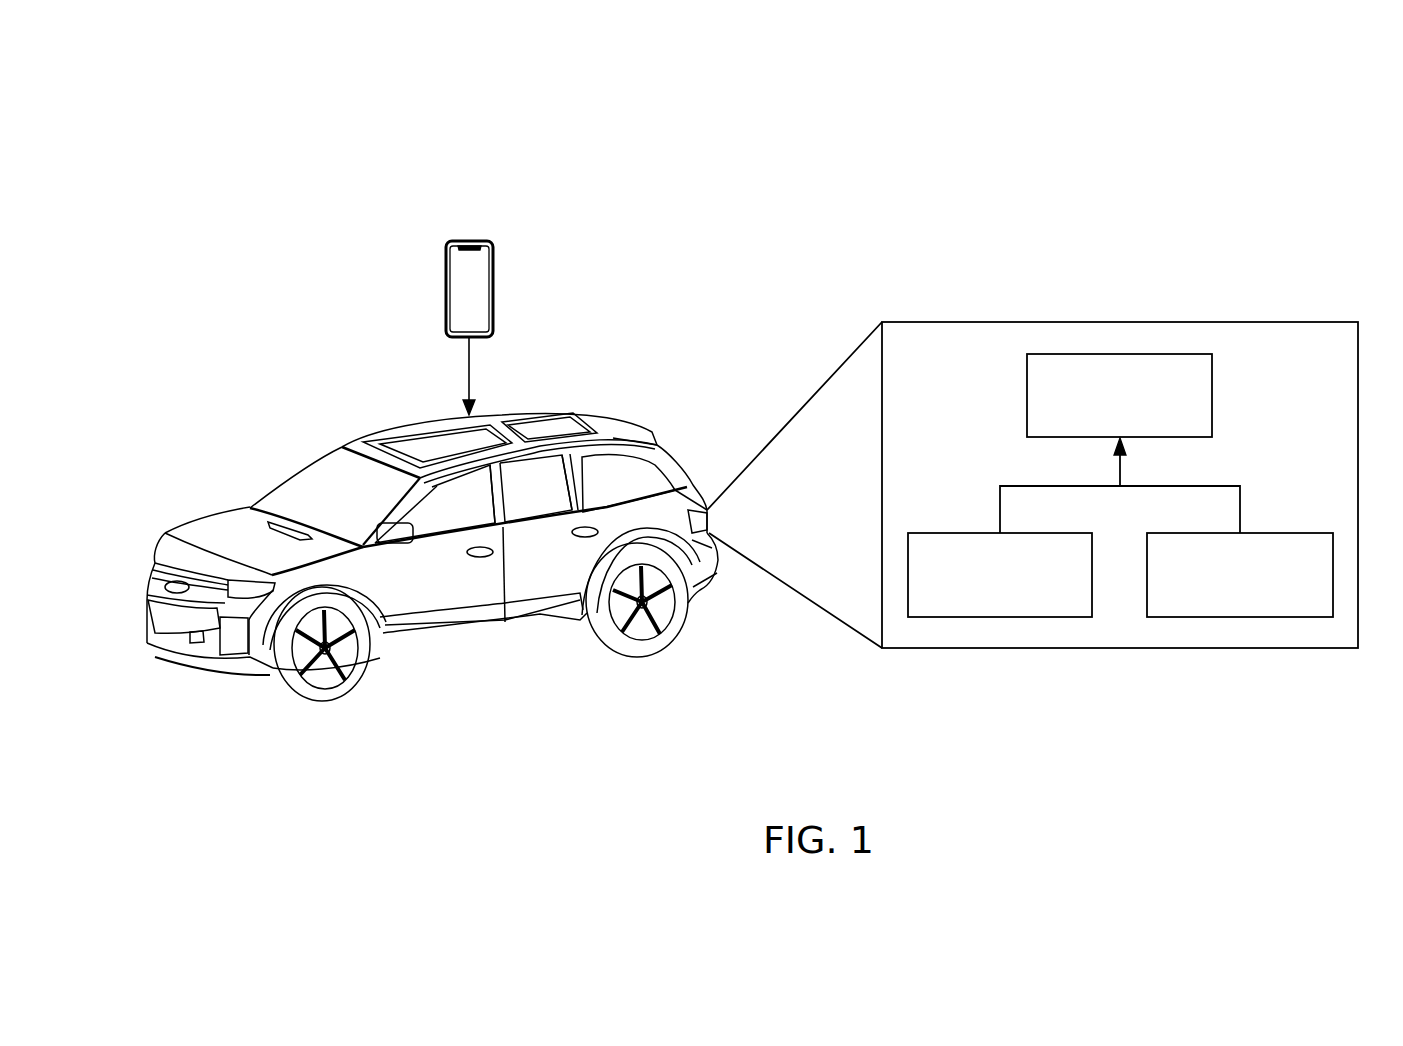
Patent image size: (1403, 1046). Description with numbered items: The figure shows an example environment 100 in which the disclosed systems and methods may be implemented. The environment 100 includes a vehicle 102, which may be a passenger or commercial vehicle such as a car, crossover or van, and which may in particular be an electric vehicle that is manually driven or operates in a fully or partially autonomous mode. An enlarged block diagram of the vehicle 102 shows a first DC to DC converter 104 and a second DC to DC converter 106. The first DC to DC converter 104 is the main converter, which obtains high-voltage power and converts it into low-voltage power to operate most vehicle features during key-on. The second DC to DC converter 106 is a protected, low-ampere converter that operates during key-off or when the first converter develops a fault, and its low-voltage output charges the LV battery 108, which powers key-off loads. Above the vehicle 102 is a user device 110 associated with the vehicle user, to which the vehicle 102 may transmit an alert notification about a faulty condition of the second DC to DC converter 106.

The environment 100 is at (302, 124).
The vehicle 102 is at (206, 515).
The first DC to DC converter 104 is at (1000, 617).
The second DC to DC converter 106 is at (1240, 617).
The LV battery 108 is at (1212, 394).
The user device 110 is at (494, 287).